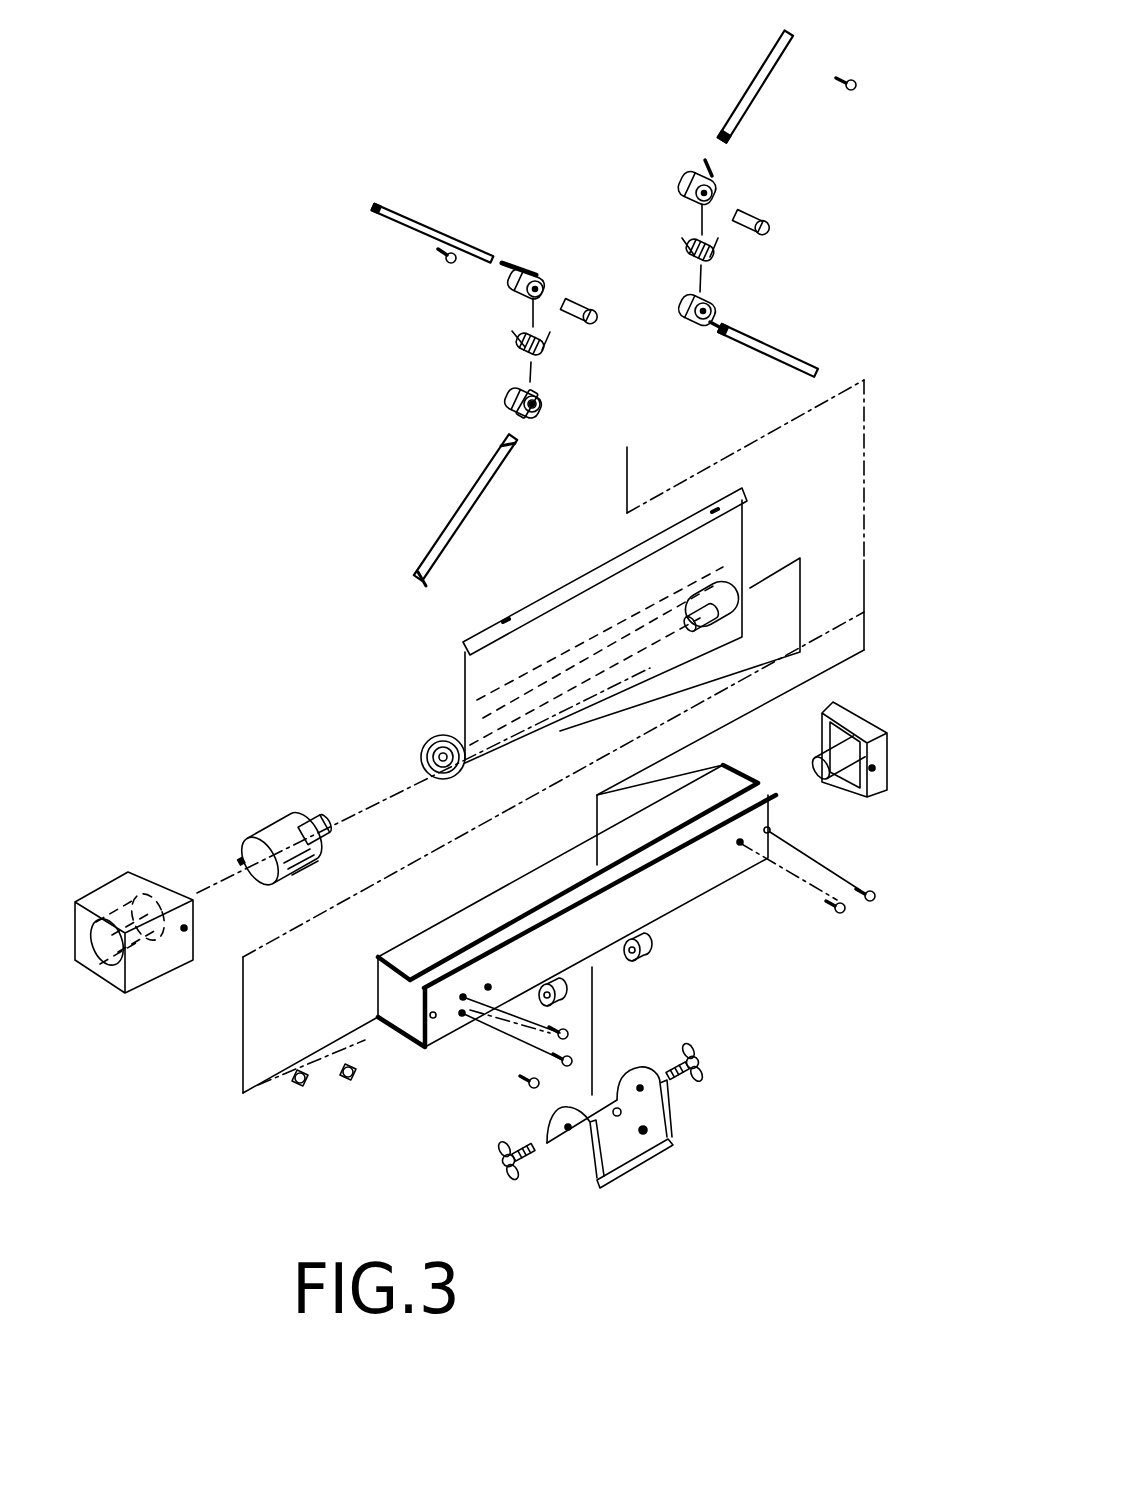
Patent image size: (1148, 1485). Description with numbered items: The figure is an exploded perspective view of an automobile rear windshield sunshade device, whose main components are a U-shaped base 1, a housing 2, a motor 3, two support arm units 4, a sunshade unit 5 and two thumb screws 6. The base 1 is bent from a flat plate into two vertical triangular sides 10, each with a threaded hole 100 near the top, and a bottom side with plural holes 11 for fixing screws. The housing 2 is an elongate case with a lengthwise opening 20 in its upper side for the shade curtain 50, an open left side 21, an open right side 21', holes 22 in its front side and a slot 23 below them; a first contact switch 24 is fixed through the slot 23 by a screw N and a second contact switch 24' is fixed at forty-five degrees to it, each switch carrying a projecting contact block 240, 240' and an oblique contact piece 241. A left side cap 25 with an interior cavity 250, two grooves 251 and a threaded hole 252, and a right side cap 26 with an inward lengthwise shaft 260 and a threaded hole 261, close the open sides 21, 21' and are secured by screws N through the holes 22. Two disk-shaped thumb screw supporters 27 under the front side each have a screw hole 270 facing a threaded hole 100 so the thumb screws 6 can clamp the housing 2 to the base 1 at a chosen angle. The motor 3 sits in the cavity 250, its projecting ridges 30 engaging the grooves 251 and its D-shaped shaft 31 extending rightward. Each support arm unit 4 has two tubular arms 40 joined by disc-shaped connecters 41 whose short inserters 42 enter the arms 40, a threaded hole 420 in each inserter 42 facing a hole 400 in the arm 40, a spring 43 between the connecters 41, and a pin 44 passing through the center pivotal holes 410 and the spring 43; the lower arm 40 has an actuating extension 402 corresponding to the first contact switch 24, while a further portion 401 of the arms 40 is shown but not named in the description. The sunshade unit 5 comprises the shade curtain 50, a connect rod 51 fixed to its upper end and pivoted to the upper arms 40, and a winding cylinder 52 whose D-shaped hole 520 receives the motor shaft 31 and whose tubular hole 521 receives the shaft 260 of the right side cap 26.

The U-shaped base 1 is at (673, 1166).
The vertical triangular side 10 is at (650, 1110).
The holes 11 is at (670, 1145).
The threaded hole 100 is at (575, 1130).
The housing 2 is at (715, 935).
The lengthwise opening 20 is at (541, 893).
The open left side 21 is at (337, 970).
The open right side 21' is at (770, 760).
The holes 22 is at (488, 987).
The slot 23 is at (462, 1013).
The first contact switch 24 is at (270, 1124).
The second contact switch 24' is at (357, 1123).
The projecting contact block 240 is at (238, 1119).
The projecting contact block 240' is at (393, 1116).
The contact piece 241 is at (300, 1075).
The left side cap 25 is at (148, 980).
The interior cavity 250 is at (110, 953).
The grooves 251 is at (152, 957).
The threaded hole 252 is at (185, 932).
The right side cap 26 is at (859, 739).
The lengthwise shaft 260 is at (820, 760).
The threaded hole 261 is at (880, 780).
The thumb screw supporter 27 is at (650, 955).
The screw hole 270 is at (633, 963).
The motor 3 is at (276, 811).
The projecting ridges 30 is at (752, 78).
The shaft 31 is at (305, 832).
The support arm unit 4 is at (652, 170).
The tubular arm 40 is at (417, 216).
The hole 400 is at (495, 258).
The rod end 401 is at (378, 220).
The actuating extension 402 is at (413, 575).
The disc-shaped connecter 41 is at (680, 297).
The center pivotal hole 410 is at (540, 408).
The short inserter 42 is at (528, 276).
The threaded hole 420 is at (505, 267).
The spring 43 is at (507, 348).
The pin 44 is at (600, 327).
The sunshade unit 5 is at (568, 628).
The shade curtain 50 is at (480, 672).
The connect rod 51 is at (557, 587).
The winding cylinder 52 is at (440, 728).
The D-shaped hole 520 is at (422, 757).
The tubular hole 521 is at (740, 583).
The thumb screw 6 is at (707, 1068).
The screw N is at (790, 43).